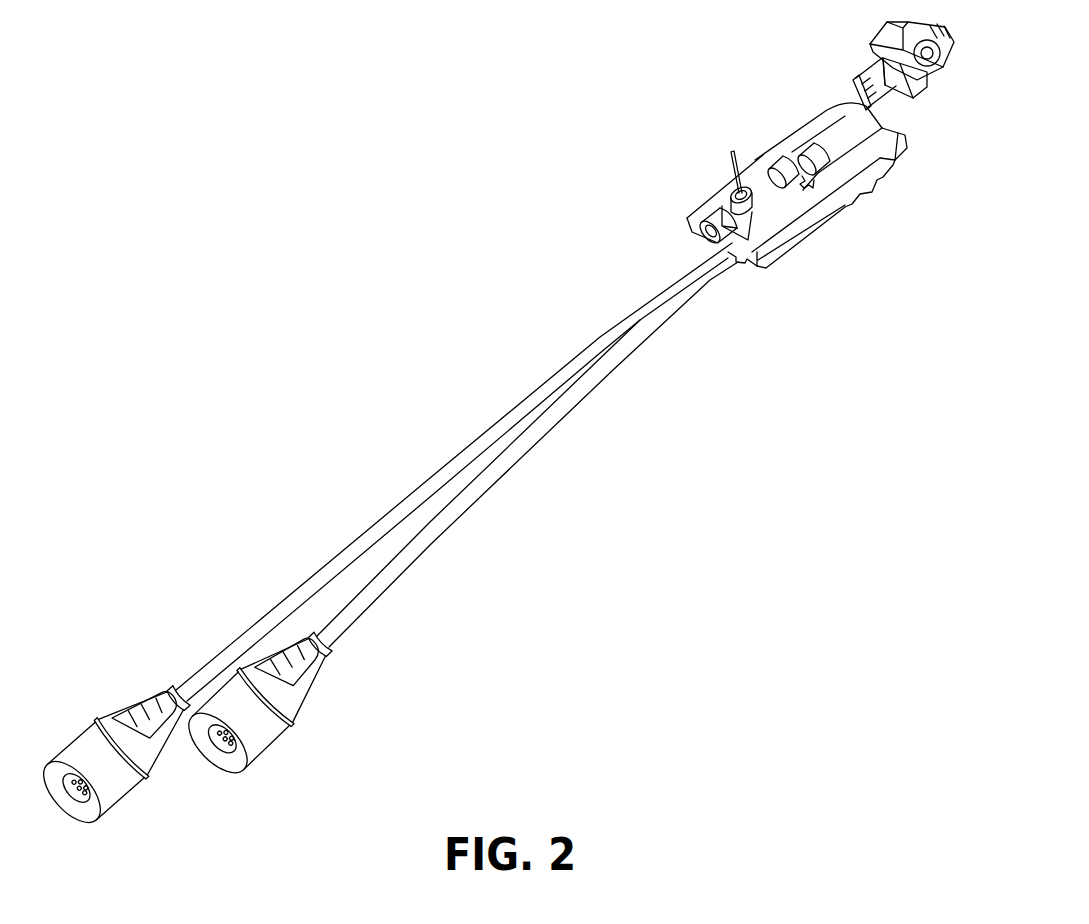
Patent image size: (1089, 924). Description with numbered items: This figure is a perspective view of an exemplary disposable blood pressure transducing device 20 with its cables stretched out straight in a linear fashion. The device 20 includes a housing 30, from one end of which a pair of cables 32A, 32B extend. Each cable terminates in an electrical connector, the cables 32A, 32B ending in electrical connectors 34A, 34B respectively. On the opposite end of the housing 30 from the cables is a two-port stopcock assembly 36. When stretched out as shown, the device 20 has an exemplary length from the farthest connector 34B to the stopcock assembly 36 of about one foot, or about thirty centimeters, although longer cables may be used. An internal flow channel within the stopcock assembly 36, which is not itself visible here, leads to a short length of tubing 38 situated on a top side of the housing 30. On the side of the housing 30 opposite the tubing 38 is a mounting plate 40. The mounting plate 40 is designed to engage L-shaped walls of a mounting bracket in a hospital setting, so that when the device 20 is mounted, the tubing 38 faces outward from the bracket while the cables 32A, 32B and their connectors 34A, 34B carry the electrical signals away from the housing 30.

The disposable blood pressure transducing device 20 is at (418, 222).
The housing 30 is at (845, 155).
The cable 32A is at (470, 507).
The cable 32B is at (490, 436).
The electrical connector 34A is at (277, 738).
The electrical connector 34B is at (88, 726).
The two-port stopcock assembly 36 is at (926, 89).
The tubing 38 is at (815, 133).
The mounting plate 40 is at (813, 227).